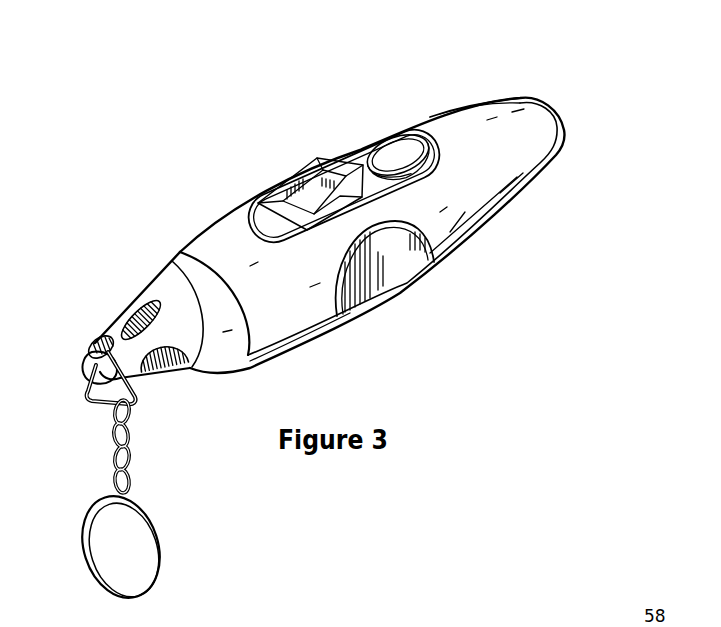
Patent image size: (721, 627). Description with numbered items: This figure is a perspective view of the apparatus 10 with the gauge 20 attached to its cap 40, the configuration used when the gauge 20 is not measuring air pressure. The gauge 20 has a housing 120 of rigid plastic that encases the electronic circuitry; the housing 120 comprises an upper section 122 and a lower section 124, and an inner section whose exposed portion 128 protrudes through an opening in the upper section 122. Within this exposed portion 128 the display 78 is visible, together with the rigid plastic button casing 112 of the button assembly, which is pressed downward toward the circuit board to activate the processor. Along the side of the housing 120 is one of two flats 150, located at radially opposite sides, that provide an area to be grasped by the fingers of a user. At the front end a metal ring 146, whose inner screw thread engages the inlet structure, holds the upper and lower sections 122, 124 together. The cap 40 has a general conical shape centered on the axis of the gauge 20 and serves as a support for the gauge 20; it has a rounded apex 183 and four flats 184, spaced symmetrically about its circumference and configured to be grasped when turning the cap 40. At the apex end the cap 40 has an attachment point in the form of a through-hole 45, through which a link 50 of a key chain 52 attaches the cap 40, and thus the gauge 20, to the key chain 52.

The apparatus 10 is at (566, 69).
The gauge 20 is at (448, 90).
The cap 40 is at (112, 302).
The through-hole 45 is at (91, 334).
The link 50 is at (140, 392).
The key chain 52 is at (138, 504).
The display 78 is at (317, 200).
The button casing 112 is at (395, 147).
The housing 120 is at (491, 95).
The upper section 122 is at (470, 105).
The lower section 124 is at (526, 192).
The exposed portion 128 is at (348, 152).
The metal ring 146 is at (182, 278).
The flats 150 is at (370, 286).
The rounded apex 183 is at (85, 369).
The flats 184 is at (172, 364).